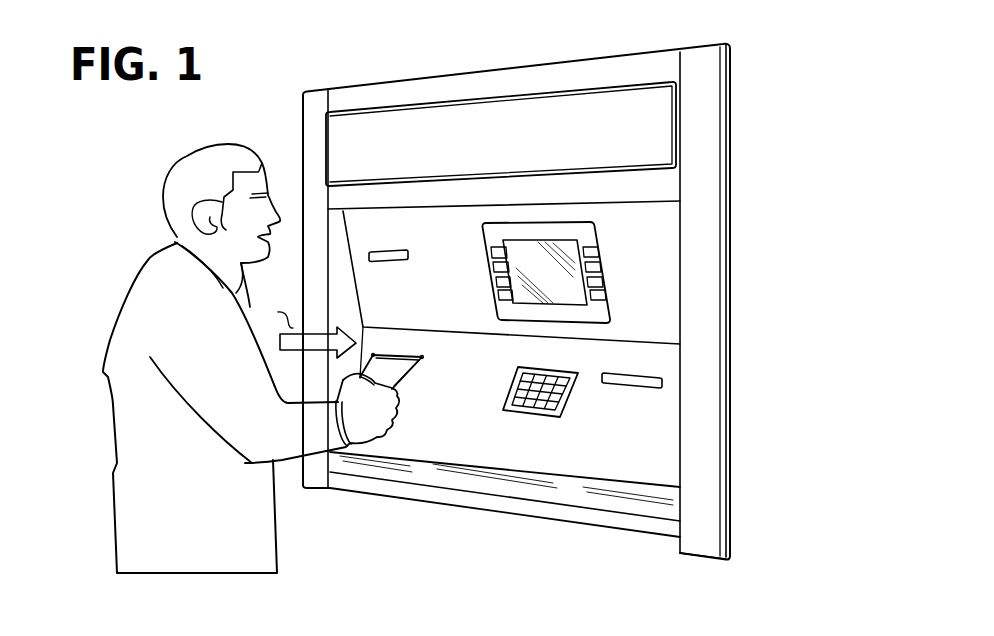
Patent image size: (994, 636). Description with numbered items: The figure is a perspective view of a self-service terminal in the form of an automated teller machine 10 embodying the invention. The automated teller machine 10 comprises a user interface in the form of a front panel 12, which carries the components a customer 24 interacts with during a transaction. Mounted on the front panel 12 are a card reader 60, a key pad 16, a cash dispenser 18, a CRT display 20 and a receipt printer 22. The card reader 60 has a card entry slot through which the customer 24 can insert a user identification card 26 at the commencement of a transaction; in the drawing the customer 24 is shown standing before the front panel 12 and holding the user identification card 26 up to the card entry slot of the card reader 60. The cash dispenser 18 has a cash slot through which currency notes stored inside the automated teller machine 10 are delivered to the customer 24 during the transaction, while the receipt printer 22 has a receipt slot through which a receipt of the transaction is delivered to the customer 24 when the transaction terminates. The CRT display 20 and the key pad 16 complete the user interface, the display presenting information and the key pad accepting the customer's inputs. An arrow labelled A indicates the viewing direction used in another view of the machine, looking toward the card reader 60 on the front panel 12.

The automated teller machine 10 is at (770, 82).
The front panel 12 is at (653, 291).
The key pad 16 is at (530, 403).
The cash dispenser 18 is at (628, 382).
The CRT display 20 is at (525, 293).
The receipt printer 22 is at (388, 259).
The customer 24 is at (140, 266).
The user identification card 26 is at (420, 389).
The card reader 60 is at (424, 358).